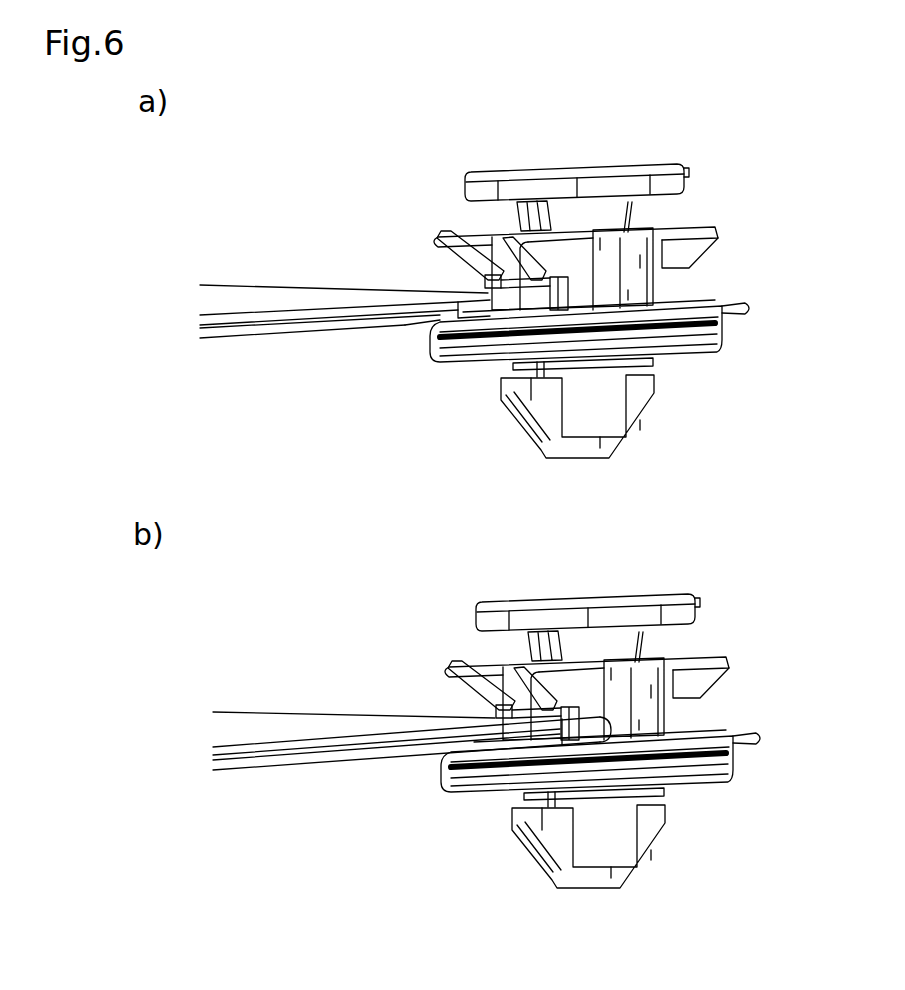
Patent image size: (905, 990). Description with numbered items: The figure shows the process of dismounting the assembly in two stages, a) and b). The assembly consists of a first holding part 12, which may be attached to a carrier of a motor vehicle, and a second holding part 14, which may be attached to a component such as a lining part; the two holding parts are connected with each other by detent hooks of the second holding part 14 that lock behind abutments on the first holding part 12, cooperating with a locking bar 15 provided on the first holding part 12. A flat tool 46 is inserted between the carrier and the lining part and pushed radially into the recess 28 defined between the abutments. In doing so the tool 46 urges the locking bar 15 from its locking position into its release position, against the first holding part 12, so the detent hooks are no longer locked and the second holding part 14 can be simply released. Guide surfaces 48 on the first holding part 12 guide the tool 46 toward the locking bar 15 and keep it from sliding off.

In FIG. 6a, the first holding part 12 is at (720, 326).
In FIG. 6b, the first holding part 12 is at (733, 757).
In FIG. 6a, the second holding part 14 is at (686, 178).
In FIG. 6b, the second holding part 14 is at (697, 608).
In FIG. 6a, the locking bar 15 is at (520, 296).
In FIG. 6b, the locking bar 15 is at (588, 840).
In FIG. 6a, the recess 28 is at (477, 246).
In FIG. 6b, the recess 28 is at (587, 685).
In FIG. 6a, the tool 46 is at (270, 306).
In FIG. 6b, the tool 46 is at (283, 735).
In FIG. 6a, the guide surfaces 48 is at (470, 258).
In FIG. 6b, the guide surfaces 48 is at (490, 690).